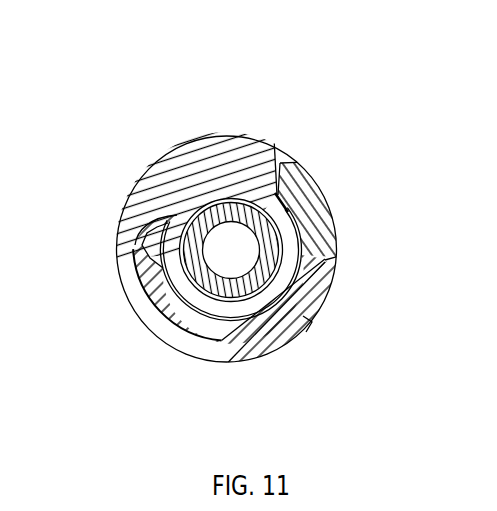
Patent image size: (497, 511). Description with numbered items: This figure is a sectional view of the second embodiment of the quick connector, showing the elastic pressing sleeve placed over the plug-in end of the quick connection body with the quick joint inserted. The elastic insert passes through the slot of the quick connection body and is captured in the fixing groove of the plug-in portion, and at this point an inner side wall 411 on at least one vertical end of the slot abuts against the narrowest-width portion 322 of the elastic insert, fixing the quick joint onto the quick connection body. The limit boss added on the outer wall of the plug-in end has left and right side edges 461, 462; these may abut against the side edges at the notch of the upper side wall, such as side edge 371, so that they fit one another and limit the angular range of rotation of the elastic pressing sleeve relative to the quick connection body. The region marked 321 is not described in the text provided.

The inner sleeve 321 is at (288, 203).
The narrowest-width portion 322 is at (162, 220).
The side edge 371 is at (274, 193).
The inner side wall 411 is at (118, 256).
The left side edge 461 is at (276, 190).
The right side edge 462 is at (328, 262).